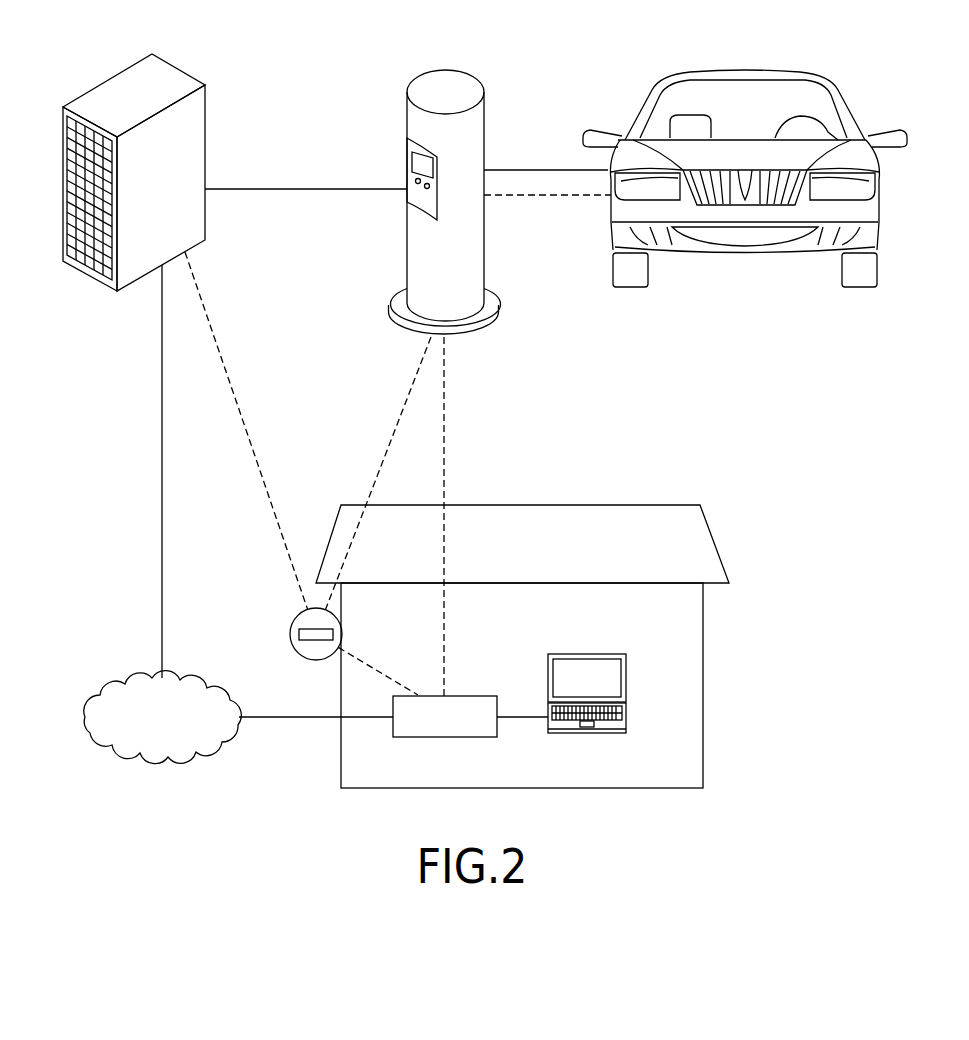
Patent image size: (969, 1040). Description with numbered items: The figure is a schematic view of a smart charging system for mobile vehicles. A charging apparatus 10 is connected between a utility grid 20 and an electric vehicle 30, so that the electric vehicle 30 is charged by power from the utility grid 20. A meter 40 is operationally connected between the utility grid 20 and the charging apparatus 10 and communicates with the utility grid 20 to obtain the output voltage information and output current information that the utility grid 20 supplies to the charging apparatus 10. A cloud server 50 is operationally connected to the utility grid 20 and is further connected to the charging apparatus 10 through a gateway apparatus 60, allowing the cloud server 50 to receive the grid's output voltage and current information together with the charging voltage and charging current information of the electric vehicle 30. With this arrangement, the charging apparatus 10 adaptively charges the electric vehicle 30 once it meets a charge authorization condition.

The charging apparatus 10 is at (447, 80).
The utility grid 20 is at (143, 72).
The electric vehicle 30 is at (757, 73).
The meter 40 is at (298, 620).
The cloud server 50 is at (132, 695).
The gateway apparatus 60 is at (468, 697).